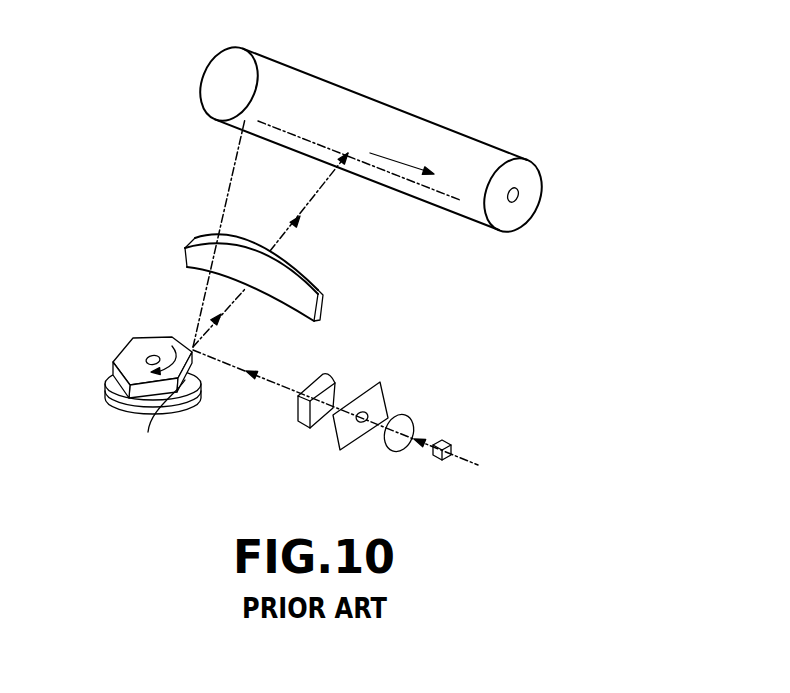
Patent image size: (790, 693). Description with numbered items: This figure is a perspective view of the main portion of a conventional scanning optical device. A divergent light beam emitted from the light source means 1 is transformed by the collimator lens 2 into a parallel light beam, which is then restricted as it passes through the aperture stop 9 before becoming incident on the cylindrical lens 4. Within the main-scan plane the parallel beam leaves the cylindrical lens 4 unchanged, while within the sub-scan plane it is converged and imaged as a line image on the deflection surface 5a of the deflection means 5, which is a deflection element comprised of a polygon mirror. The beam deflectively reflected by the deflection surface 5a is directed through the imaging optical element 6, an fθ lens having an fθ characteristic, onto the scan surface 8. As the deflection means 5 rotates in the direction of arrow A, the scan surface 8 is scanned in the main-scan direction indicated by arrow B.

The light source means 1 is at (440, 458).
The collimator lens 2 is at (398, 452).
The cylindrical lens 4 is at (297, 408).
The deflection means 5 is at (143, 368).
The deflection surface 5a is at (192, 347).
The imaging optical element 6 is at (227, 258).
The scan surface 8 is at (467, 225).
The aperture stop 9 is at (342, 432).